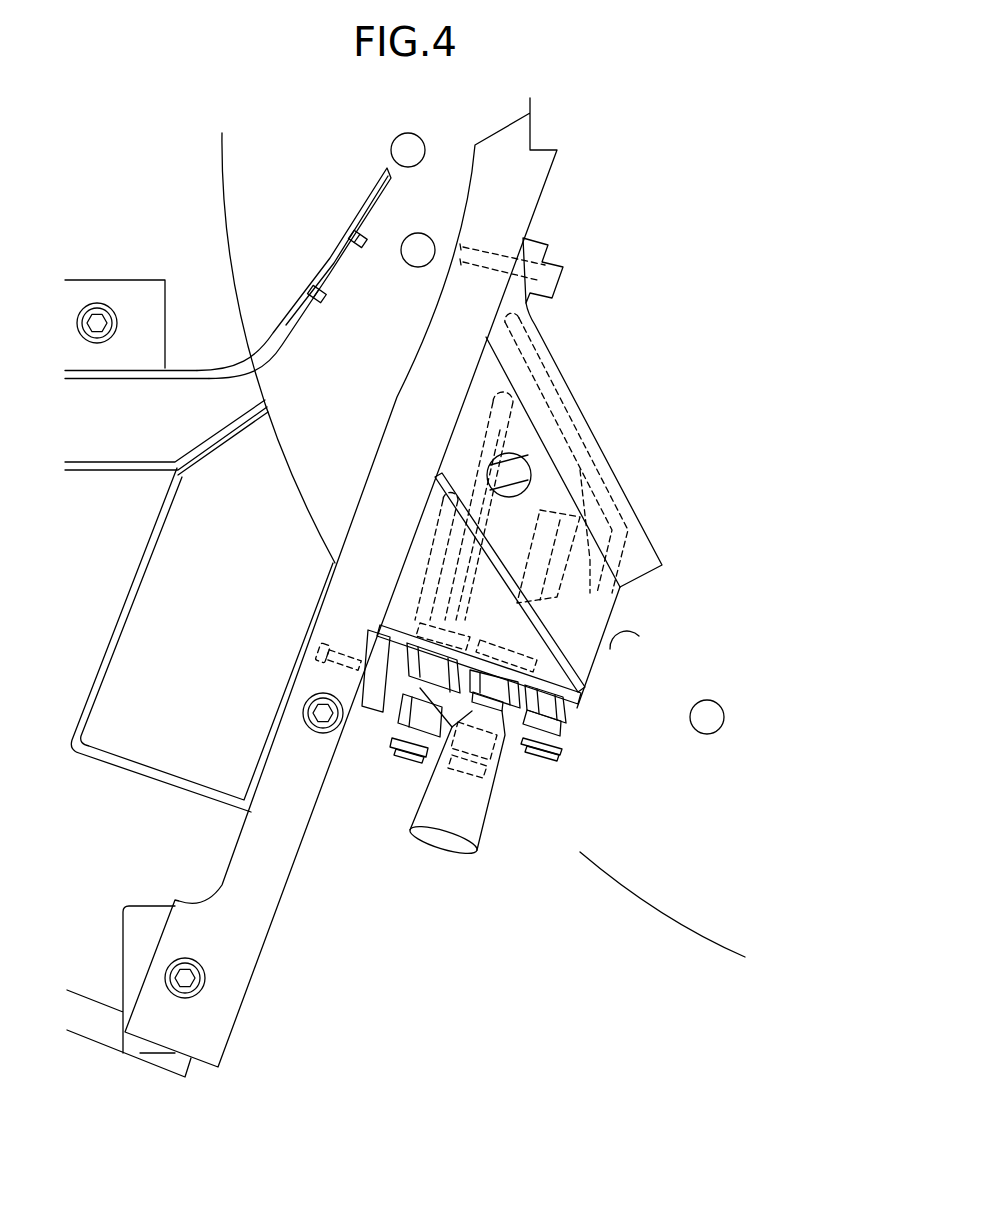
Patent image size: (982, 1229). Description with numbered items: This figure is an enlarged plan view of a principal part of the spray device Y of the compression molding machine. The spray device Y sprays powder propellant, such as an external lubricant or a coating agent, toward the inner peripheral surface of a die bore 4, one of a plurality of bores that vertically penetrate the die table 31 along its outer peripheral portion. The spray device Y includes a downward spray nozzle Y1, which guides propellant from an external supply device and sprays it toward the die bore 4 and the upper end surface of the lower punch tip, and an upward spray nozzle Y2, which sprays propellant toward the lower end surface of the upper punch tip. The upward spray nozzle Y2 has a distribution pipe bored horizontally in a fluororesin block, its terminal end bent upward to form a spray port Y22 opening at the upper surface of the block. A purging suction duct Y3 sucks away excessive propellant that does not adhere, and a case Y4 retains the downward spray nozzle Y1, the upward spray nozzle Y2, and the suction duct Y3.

The die bore 4 is at (391, 150).
The die table 31 is at (224, 232).
The spray device Y is at (587, 412).
The downward spray nozzle Y1 is at (547, 610).
The upward spray nozzle Y2 is at (461, 548).
The spray port Y22 is at (488, 470).
The purging suction duct Y3 is at (488, 820).
The case Y4 is at (595, 662).